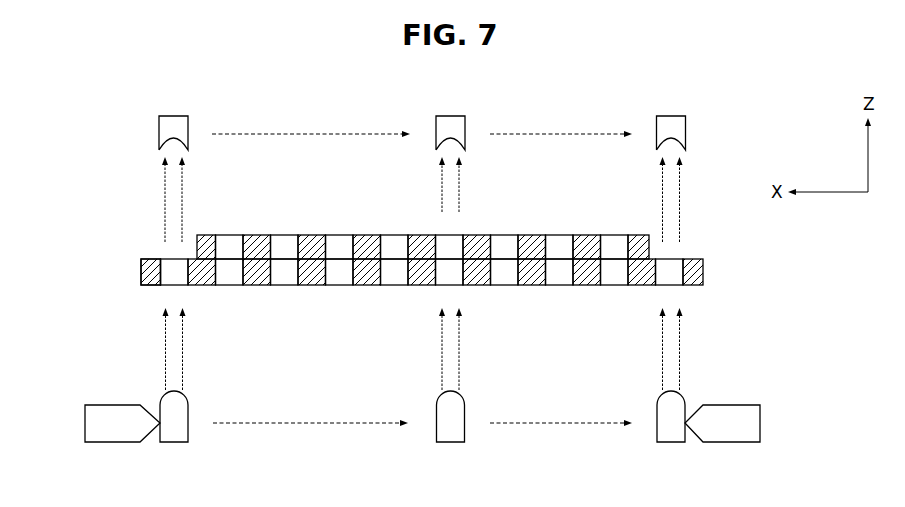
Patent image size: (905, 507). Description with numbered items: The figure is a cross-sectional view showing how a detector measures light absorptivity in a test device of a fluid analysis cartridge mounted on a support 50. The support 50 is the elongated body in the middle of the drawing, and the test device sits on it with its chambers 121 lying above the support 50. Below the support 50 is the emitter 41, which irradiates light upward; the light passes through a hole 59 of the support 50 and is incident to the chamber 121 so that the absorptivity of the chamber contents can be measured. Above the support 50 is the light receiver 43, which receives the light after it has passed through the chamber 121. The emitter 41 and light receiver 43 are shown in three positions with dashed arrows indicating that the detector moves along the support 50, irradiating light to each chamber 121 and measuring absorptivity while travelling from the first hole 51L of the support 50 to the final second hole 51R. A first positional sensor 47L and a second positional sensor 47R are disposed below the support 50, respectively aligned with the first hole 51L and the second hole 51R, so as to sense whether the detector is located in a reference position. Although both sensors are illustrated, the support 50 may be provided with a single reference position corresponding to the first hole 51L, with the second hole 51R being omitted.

The emitter 41 is at (174, 432).
The light receiver 43 is at (177, 123).
The first positional sensor 47L is at (85, 420).
The second positional sensor 47R is at (757, 417).
The support 50 is at (434, 262).
The first hole 51L is at (171, 276).
The second hole 51R is at (668, 272).
The hole 59 is at (434, 292).
The chamber 121 is at (226, 246).